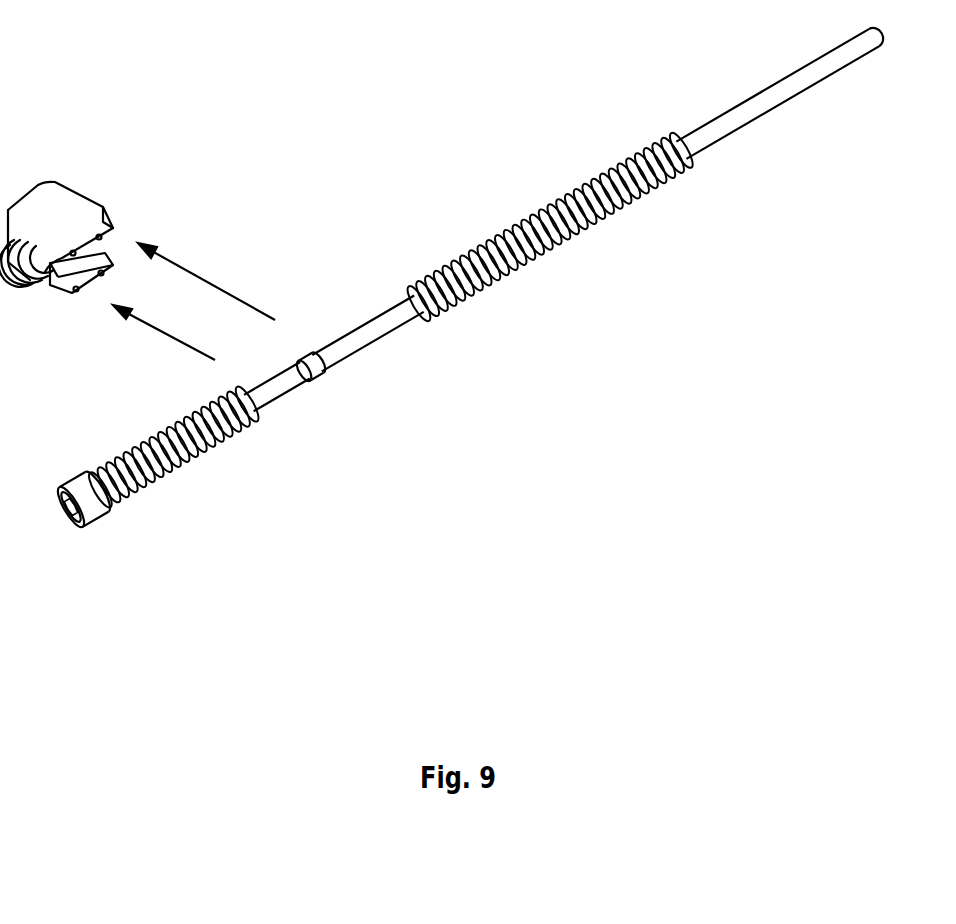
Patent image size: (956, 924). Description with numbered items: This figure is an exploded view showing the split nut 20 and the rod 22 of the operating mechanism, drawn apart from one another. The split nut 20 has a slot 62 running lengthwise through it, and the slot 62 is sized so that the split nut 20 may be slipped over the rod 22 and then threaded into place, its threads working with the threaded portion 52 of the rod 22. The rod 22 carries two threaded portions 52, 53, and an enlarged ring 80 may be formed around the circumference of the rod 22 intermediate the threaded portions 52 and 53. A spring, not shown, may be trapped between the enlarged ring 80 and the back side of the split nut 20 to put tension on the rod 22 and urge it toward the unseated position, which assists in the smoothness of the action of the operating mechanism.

The split nut 20 is at (62, 203).
The slot 62 is at (110, 248).
The rod 22 is at (723, 110).
The threaded portion 53 is at (560, 243).
The enlarged ring 80 is at (322, 378).
The threaded portion 52 is at (180, 465).